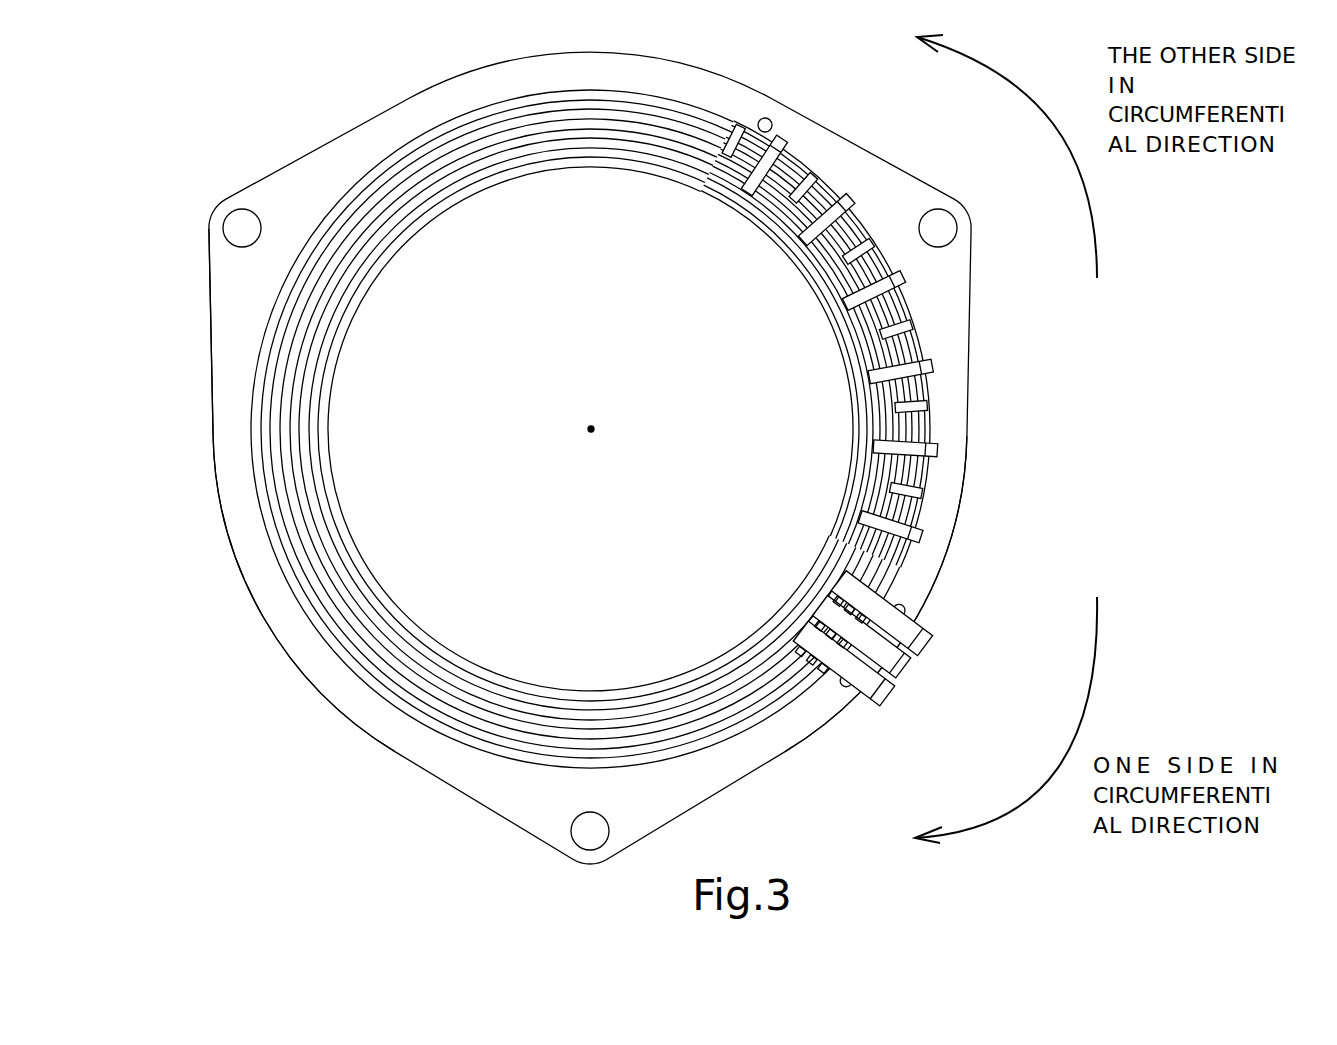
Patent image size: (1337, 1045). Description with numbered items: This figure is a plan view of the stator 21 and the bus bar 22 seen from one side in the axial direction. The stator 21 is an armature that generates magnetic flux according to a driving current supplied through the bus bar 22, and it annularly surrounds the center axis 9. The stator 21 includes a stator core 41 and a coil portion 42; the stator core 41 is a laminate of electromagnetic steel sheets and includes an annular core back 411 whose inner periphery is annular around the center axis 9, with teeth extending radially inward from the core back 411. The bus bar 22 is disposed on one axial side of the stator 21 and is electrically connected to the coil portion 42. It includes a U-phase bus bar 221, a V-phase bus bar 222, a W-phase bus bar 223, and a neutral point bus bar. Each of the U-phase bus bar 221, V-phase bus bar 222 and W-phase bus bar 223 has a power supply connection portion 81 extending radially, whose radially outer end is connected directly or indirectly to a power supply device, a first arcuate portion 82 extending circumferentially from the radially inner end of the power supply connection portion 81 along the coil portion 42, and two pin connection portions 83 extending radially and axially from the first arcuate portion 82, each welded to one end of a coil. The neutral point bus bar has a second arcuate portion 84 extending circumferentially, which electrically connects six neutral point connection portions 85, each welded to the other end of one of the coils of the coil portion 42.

The center axis 9 is at (591, 429).
The stator 21 is at (262, 160).
The bus bar 22 is at (927, 568).
The U-phase bus bar 221 is at (935, 648).
The V-phase bus bar 222 is at (900, 678).
The W-phase bus bar 223 is at (877, 712).
The stator core 41 is at (198, 455).
The core back 411 is at (236, 327).
The coil portion 42 is at (362, 157).
The power supply connection portion 81 is at (817, 628).
The first arcuate portion 82 is at (847, 340).
The pin connection portion 83 is at (847, 213).
The second arcuate portion 84 is at (878, 394).
The neutral point connection portion 85 is at (748, 137).